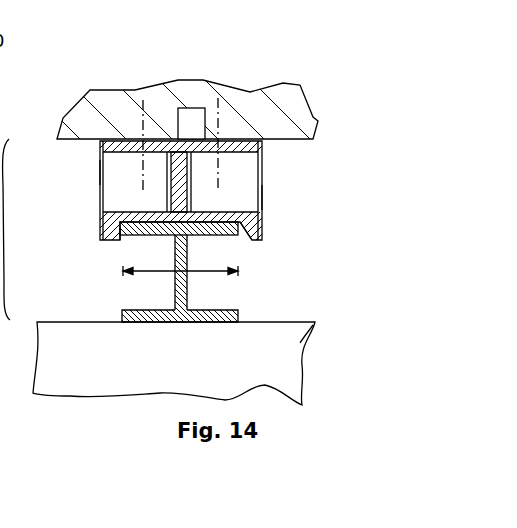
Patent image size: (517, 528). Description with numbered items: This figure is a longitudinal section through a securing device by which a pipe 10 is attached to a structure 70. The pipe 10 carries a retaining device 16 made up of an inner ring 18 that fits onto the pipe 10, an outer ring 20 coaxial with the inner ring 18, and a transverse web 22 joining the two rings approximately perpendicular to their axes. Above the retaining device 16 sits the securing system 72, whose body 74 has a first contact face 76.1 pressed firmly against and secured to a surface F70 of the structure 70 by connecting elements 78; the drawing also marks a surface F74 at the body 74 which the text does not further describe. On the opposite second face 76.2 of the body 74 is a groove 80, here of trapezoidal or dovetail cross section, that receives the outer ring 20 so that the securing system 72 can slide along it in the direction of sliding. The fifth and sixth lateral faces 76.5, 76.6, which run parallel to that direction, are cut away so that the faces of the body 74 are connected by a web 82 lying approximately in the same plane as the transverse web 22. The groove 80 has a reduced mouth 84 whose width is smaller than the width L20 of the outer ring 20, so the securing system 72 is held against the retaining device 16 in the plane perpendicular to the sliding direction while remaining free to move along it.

The pipe 10 is at (313, 322).
The retaining device 16 is at (88, 282).
The inner ring 18 is at (232, 309).
The outer ring 20 is at (169, 291).
The transverse web 22 is at (188, 292).
The structure 70 is at (277, 93).
The securing system 72 is at (285, 157).
The body 74 is at (165, 197).
The first contact face 76.1 is at (183, 108).
The second face 76.2 is at (240, 237).
The fifth lateral face 76.5 is at (100, 172).
The sixth lateral face 76.6 is at (262, 197).
The connecting elements 78 is at (143, 100).
The groove 80 is at (219, 226).
The web 82 is at (180, 181).
The reduced mouth 84 is at (125, 241).
The surface of the structure F70 is at (305, 140).
The force on receiving space F74 is at (100, 139).
The width of the outer ring L20 is at (180, 263).